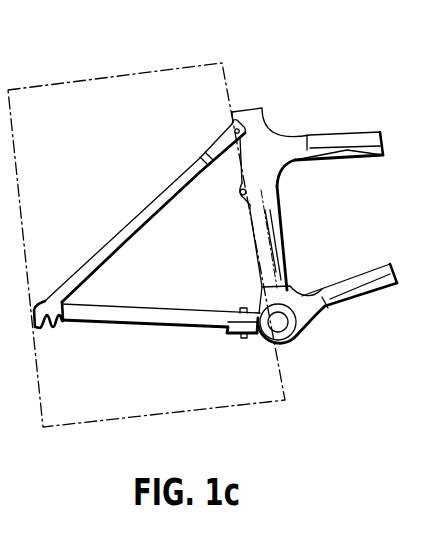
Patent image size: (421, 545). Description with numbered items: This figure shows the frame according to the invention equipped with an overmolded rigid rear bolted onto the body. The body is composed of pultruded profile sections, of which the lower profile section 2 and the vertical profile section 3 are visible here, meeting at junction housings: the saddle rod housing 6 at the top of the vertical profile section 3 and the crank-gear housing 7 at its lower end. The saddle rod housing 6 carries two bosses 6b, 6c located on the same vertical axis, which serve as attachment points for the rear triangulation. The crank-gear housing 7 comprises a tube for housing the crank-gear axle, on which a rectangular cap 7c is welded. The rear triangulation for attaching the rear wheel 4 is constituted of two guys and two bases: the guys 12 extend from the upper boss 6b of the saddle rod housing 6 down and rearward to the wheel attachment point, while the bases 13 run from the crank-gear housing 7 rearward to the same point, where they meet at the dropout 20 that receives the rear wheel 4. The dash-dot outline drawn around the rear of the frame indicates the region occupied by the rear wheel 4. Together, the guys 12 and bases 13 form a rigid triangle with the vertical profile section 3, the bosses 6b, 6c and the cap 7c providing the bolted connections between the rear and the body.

The lower profile section 2 is at (364, 295).
The vertical profile section 3 is at (278, 228).
The rear wheel 4 is at (50, 84).
The saddle rod housing 6 is at (277, 138).
The boss 6b is at (226, 121).
The boss 6c is at (235, 188).
The crank-gear housing 7 is at (299, 313).
The rectangular cap 7c is at (242, 339).
The guys 12 is at (155, 216).
The bases 13 is at (166, 318).
The dropout 20 is at (38, 304).